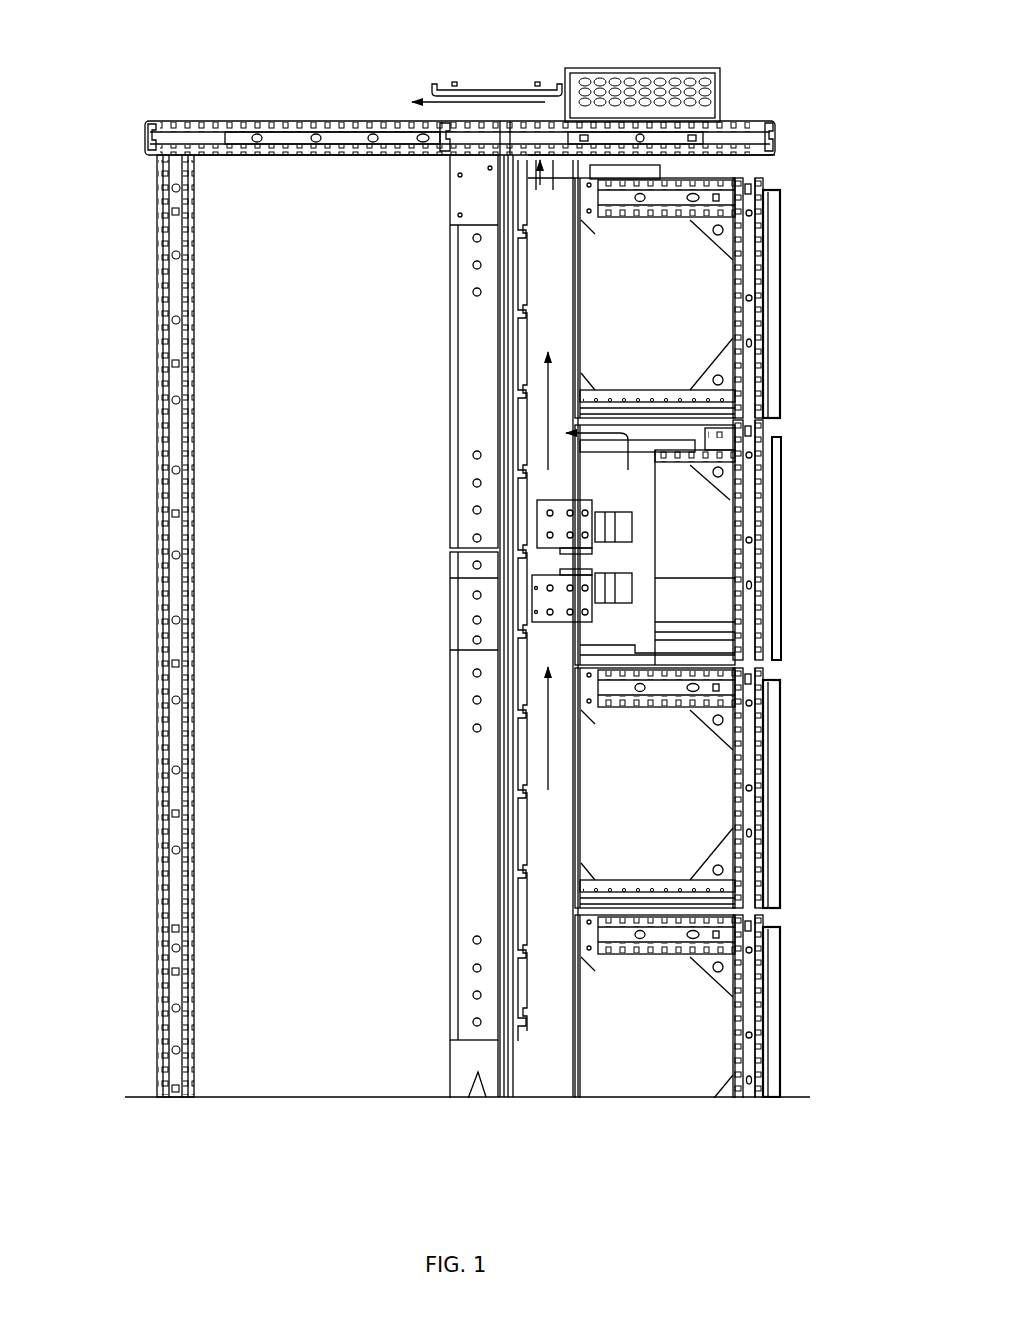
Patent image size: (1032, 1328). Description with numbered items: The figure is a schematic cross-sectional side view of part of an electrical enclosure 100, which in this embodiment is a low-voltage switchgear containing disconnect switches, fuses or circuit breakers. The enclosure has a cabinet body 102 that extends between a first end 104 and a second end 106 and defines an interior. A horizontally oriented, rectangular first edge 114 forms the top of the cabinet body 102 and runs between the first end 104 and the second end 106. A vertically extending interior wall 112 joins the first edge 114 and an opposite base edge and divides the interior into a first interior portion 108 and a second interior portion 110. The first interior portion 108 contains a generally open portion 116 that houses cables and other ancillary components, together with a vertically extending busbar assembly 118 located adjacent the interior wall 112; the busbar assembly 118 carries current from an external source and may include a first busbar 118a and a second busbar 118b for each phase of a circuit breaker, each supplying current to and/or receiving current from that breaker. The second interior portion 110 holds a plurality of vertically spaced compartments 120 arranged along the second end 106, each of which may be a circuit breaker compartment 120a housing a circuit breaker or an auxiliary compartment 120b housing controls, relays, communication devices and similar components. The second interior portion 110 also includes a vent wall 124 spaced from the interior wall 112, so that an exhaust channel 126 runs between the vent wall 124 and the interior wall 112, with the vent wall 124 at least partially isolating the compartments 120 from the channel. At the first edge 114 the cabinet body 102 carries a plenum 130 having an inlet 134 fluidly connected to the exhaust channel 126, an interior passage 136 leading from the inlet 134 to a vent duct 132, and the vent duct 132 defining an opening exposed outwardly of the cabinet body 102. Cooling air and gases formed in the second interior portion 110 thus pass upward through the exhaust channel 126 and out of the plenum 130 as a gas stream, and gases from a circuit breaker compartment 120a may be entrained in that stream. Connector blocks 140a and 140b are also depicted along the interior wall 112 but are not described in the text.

The electrical enclosure 100 is at (150, 45).
The cabinet body 102 is at (150, 135).
The first end 104 is at (148, 358).
The second end 106 is at (795, 718).
The first interior portion 108 is at (290, 175).
The second interior portion 110 is at (660, 175).
The interior wall 112 is at (518, 160).
The first edge 114 is at (253, 120).
The open portion 116 is at (300, 270).
The busbar assembly 118 is at (448, 970).
The first busbar 118a is at (470, 805).
The second busbar 118b is at (472, 355).
The compartment 120 is at (790, 200).
The circuit breaker compartment 120a is at (790, 500).
The auxiliary compartment 120b is at (790, 287).
The vent wall 124 is at (575, 1065).
The exhaust channel 126 is at (568, 308).
The plenum 130 is at (700, 75).
The vent duct 132 is at (470, 88).
The inlet 134 is at (570, 170).
The interior passage 136 is at (600, 125).
The lower connector block 140a is at (600, 598).
The upper connector block 140b is at (600, 527).